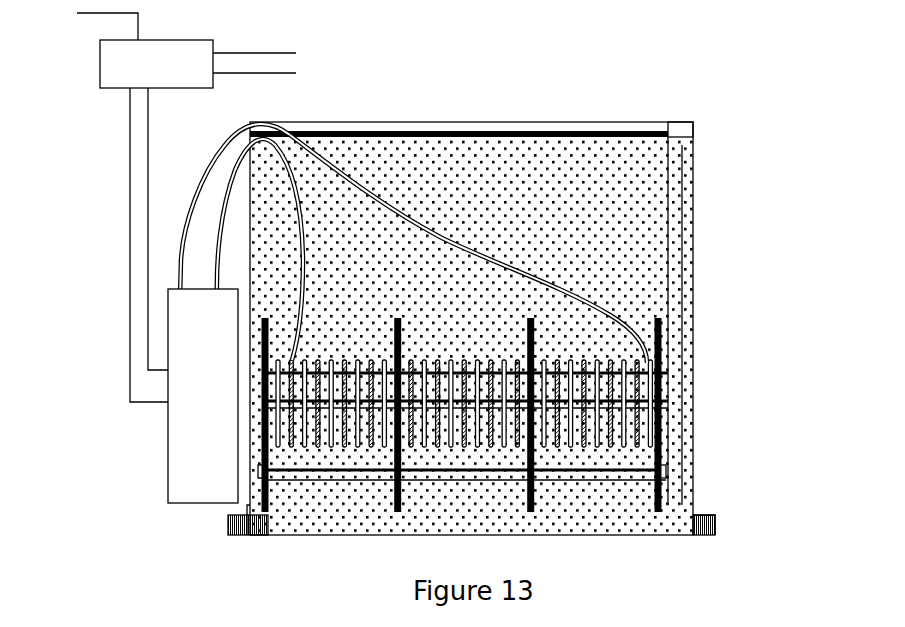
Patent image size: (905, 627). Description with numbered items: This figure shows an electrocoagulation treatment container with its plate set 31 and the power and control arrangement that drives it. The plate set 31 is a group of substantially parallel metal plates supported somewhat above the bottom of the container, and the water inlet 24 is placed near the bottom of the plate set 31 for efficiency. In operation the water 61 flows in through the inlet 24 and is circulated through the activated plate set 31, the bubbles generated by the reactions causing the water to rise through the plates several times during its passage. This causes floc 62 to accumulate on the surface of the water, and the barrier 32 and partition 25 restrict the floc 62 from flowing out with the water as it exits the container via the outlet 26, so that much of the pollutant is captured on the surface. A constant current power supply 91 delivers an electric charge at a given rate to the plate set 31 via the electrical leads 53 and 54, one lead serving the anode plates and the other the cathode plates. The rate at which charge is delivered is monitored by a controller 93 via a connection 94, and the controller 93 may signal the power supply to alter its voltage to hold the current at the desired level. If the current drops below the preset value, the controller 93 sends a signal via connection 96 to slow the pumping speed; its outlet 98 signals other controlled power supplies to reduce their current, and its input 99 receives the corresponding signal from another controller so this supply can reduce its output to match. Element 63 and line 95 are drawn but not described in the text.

The water inlet 24 is at (244, 525).
The partition 25 is at (689, 243).
The outlet 26 is at (697, 525).
The plate set 31 is at (574, 358).
The barrier 32 is at (672, 178).
The electrical lead 53 is at (186, 237).
The electrical lead 54 is at (213, 223).
The water 61 is at (538, 262).
The floc 62 is at (575, 142).
The tank cover 63 is at (695, 132).
The constant current power supply 91 is at (183, 412).
The controller 93 is at (101, 66).
The connection 94 is at (129, 282).
The control line 95 is at (147, 343).
The connection 96 is at (113, 15).
The outlet 98 is at (296, 53).
The input 99 is at (296, 73).